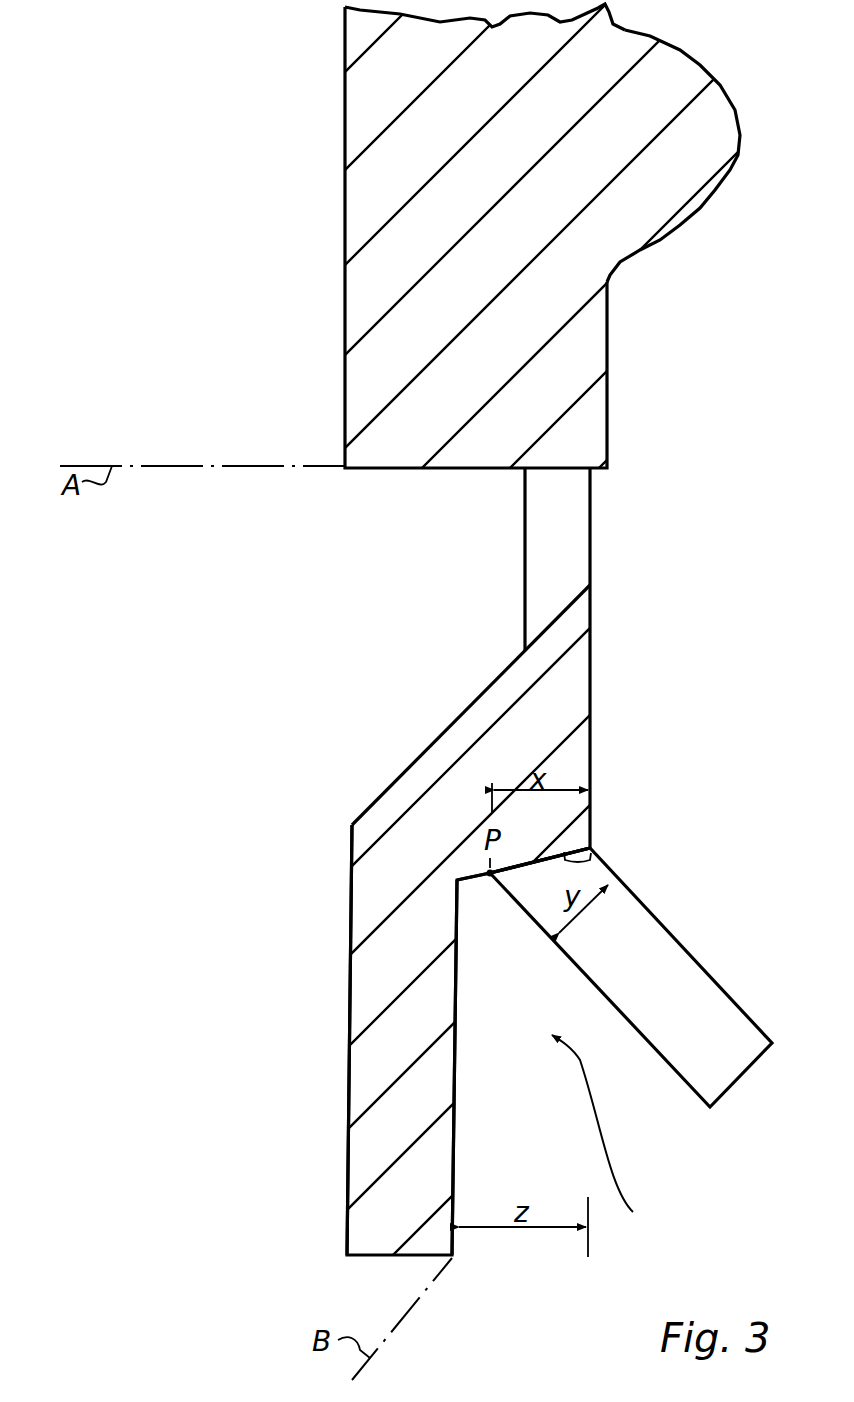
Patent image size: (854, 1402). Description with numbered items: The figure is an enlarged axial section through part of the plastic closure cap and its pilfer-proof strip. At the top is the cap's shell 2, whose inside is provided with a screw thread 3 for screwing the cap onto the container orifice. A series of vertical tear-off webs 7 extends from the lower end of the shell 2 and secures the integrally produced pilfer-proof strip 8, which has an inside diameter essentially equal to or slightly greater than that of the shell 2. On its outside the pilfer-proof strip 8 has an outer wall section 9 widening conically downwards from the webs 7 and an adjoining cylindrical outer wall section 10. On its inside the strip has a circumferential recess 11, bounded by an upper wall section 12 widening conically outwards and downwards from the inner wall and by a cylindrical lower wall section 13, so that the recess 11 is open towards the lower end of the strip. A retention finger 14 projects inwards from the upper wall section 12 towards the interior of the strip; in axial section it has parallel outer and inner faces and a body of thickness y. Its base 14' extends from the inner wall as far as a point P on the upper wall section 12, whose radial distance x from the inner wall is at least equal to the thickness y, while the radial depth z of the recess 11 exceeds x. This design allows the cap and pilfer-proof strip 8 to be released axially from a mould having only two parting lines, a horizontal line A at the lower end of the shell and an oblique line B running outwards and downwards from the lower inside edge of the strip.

The shell 2 is at (365, 333).
The screw thread 3 is at (713, 147).
The tear-off webs 7 is at (540, 550).
The pilfer-proof strip 8 is at (400, 748).
The outer wall section 9 is at (462, 715).
The cylindrical outer wall section 10 is at (347, 935).
The circumferential recess 11 is at (611, 1131).
The upper wall section 12 is at (490, 880).
The cylindrical lower wall section 13 is at (458, 1083).
The retention finger 14 is at (639, 977).
The base of the retention finger 14' is at (598, 845).